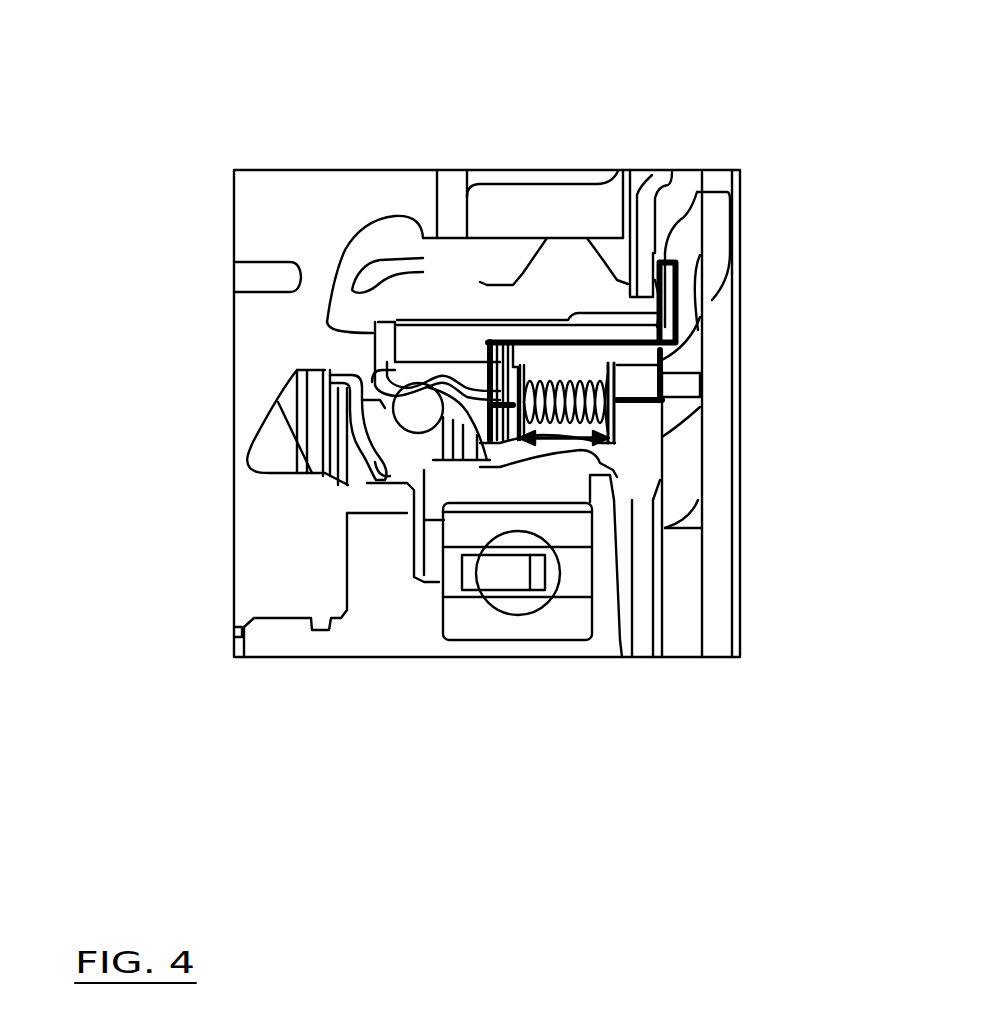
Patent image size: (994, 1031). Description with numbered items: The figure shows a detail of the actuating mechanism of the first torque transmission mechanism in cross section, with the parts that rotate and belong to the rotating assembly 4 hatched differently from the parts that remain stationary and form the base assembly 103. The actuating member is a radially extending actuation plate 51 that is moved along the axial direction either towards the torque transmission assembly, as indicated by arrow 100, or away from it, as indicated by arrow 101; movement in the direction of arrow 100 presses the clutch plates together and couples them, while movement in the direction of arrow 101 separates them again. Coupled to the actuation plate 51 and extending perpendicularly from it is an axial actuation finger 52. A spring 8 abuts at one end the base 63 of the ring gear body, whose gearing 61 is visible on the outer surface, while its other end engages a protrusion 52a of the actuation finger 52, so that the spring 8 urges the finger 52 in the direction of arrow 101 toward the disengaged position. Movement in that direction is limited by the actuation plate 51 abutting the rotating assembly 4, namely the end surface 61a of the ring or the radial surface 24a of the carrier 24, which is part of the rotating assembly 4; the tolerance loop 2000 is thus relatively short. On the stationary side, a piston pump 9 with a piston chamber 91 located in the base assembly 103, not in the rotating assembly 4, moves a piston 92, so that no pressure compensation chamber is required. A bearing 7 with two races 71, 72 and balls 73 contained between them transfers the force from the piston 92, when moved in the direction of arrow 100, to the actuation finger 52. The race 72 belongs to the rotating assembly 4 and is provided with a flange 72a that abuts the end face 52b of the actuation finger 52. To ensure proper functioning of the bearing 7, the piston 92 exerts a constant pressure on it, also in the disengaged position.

The base assembly 103 is at (292, 212).
The rotating assembly 4 is at (676, 620).
The gearing 61 is at (568, 263).
The carrier 24 is at (648, 193).
The radial surface 24a is at (653, 223).
The actuation plate 51 is at (683, 237).
The tolerance loop 2000 is at (676, 290).
The end surface 61a is at (660, 310).
The actuation finger 52 is at (605, 350).
The protrusion 52a is at (503, 363).
The end face 52b is at (398, 340).
The spring 8 is at (590, 427).
The base 63 is at (647, 414).
The flange 72a is at (375, 332).
The race 72 is at (378, 355).
The race 71 is at (378, 408).
The balls 73 is at (423, 410).
The piston chamber 91 is at (278, 448).
The piston pump 9 is at (286, 502).
The bearing 7 is at (396, 500).
The piston 92 is at (373, 452).
The arrow 101 is at (705, 749).
The arrow 100 is at (705, 833).